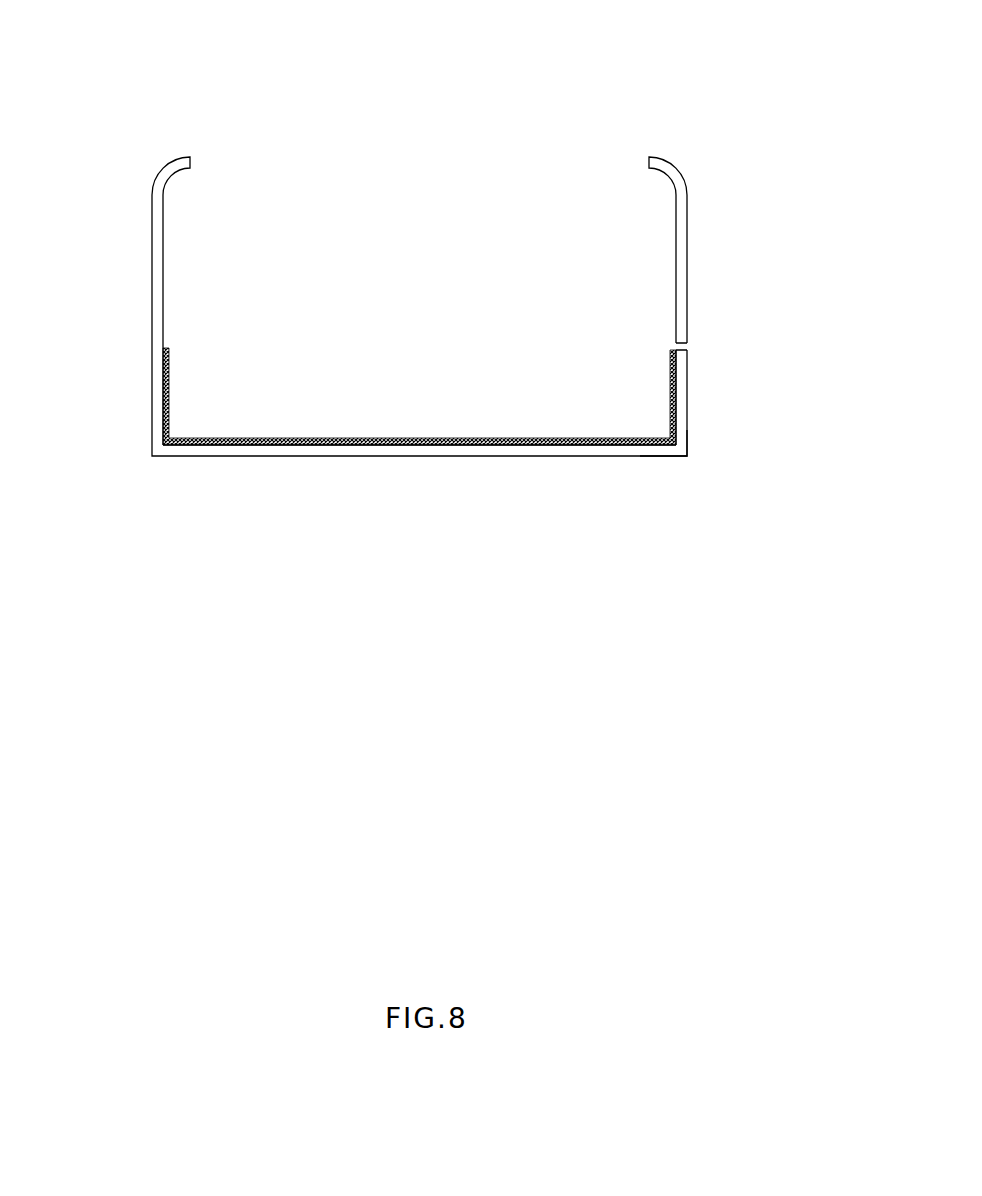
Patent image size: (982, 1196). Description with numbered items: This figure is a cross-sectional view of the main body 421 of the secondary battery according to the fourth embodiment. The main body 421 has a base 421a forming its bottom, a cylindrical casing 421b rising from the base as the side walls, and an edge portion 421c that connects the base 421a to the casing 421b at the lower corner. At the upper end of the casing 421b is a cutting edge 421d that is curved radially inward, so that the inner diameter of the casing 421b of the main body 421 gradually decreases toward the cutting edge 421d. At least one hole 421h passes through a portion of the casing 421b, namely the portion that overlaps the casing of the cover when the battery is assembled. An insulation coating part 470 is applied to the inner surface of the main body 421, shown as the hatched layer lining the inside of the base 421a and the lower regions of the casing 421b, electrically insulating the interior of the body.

The main body 421 is at (629, 110).
The base 421a is at (687, 466).
The cylindrical casing 421b is at (140, 157).
The edge portion 421c is at (689, 456).
The cutting edge 421d is at (194, 160).
The hole 421h is at (688, 346).
The insulation coating part 470 is at (418, 438).